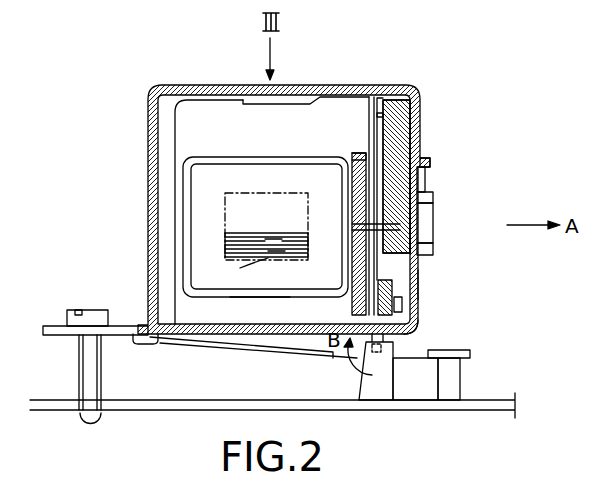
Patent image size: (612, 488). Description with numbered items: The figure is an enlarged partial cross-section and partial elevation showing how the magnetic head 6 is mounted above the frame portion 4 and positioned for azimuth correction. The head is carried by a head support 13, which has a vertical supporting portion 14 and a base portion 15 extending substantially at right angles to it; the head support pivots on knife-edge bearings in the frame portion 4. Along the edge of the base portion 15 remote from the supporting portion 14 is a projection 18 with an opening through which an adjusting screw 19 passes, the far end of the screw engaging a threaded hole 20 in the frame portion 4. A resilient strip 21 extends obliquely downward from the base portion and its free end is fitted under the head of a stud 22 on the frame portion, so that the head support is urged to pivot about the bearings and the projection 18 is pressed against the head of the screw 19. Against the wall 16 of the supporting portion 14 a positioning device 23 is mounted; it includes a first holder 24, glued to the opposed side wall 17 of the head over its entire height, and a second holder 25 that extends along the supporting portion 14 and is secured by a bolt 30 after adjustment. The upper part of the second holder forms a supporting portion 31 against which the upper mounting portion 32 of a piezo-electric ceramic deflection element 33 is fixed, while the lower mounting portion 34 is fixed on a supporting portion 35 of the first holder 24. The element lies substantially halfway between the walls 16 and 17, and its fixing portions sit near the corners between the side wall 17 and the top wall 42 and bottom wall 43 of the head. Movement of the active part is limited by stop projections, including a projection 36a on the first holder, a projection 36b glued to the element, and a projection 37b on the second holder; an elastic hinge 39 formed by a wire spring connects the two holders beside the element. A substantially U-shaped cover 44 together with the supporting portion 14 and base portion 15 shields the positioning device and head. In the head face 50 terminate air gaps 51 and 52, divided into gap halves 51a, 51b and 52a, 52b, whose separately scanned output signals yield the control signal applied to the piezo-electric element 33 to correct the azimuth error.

The frame portion 4 is at (489, 410).
The magnetic head 6 is at (170, 178).
The head support 13 is at (274, 342).
The supporting portion 14 is at (410, 284).
The base portion 15 is at (190, 336).
The wall 16 is at (422, 208).
The wall 17 is at (362, 243).
The projection 18 is at (57, 335).
The adjusting screw 19 is at (92, 312).
The threaded hole 20 is at (100, 416).
The resilient strip 21 is at (410, 360).
The stud 22 is at (458, 374).
The positioning device 23 is at (428, 177).
The first holder 24 is at (353, 157).
The second holder 25 is at (397, 142).
The bolt 30 is at (425, 224).
The supporting portion 31 is at (396, 108).
The upper mounting portion 32 is at (382, 117).
The piezo-electric ceramic deflection element 33 is at (358, 183).
The mounting portion 34 is at (370, 289).
The supporting portion 35 is at (303, 290).
The projection 36a is at (365, 162).
The projection 36b is at (415, 328).
The projection 37b is at (404, 300).
The elastic hinge 39 is at (415, 246).
The top wall 42 is at (262, 157).
The bottom wall 43 is at (260, 300).
The cover 44 is at (174, 87).
The head face 50 is at (250, 197).
The air gap 51 is at (276, 237).
The gap half 51a is at (262, 232).
The gap half 51b is at (268, 235).
The air gap 52 is at (282, 254).
The gap half 52a is at (268, 245).
The gap half 52b is at (268, 258).